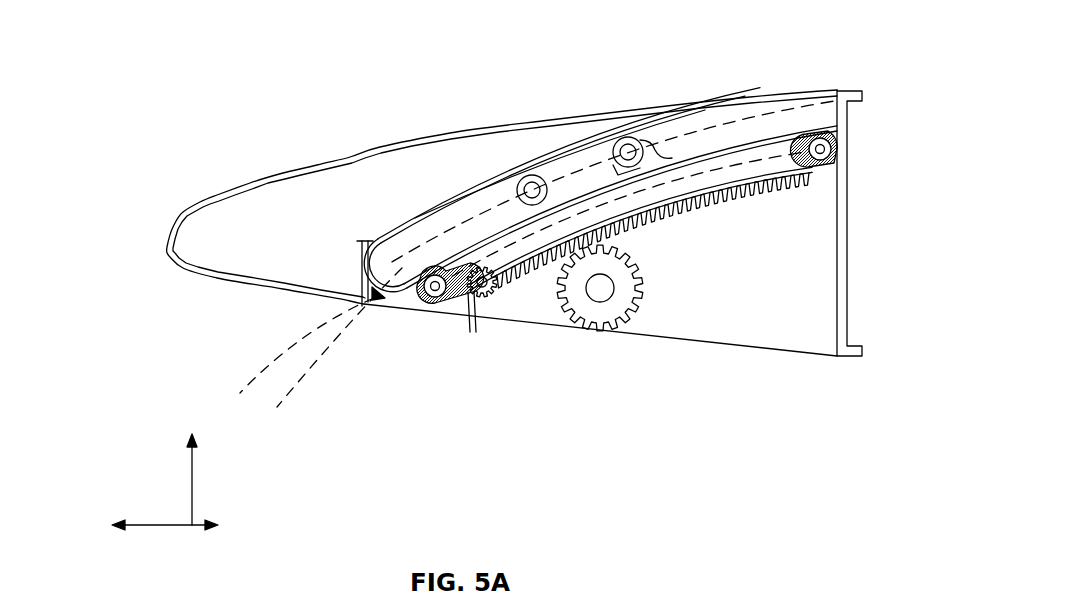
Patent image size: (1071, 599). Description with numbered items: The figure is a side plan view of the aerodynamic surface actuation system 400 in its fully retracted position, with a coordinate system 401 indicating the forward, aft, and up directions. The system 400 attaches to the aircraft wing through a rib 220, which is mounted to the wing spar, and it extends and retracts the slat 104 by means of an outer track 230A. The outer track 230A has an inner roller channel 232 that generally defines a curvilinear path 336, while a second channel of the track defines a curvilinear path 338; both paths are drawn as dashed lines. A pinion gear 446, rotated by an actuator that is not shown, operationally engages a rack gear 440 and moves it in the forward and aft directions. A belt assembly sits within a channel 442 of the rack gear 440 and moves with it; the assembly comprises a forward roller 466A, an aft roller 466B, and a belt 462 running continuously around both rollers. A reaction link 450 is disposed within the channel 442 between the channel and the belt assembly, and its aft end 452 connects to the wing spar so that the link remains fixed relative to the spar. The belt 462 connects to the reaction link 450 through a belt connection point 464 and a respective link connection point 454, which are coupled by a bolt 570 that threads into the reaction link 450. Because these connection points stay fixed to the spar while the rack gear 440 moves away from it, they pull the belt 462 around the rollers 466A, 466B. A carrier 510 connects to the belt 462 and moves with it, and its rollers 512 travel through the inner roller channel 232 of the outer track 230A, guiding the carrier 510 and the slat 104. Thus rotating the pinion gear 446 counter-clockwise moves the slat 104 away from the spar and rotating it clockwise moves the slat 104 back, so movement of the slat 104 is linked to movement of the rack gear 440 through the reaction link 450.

The aerodynamic surface actuation system 400 is at (208, 38).
The slat 104 is at (404, 136).
The rib 220 is at (749, 94).
The inner roller channel 232 is at (392, 253).
The carrier 510 is at (596, 183).
The rollers 512 is at (518, 183).
The outer track 230A is at (365, 294).
The curvilinear path 336 is at (310, 330).
The curvilinear path 338 is at (308, 380).
The channel 442 is at (402, 293).
The forward roller 466A is at (420, 353).
The belt connection point 464 is at (465, 300).
The link connection point 454 is at (472, 302).
The bolt 570 is at (498, 292).
The pinion gear 446 is at (614, 328).
The belt 462 is at (634, 223).
The rack gear 440 is at (763, 200).
The reaction link 450 is at (828, 166).
The aft end 452 is at (843, 164).
The aft roller 466B is at (820, 136).
The coordinate system 401 is at (161, 479).